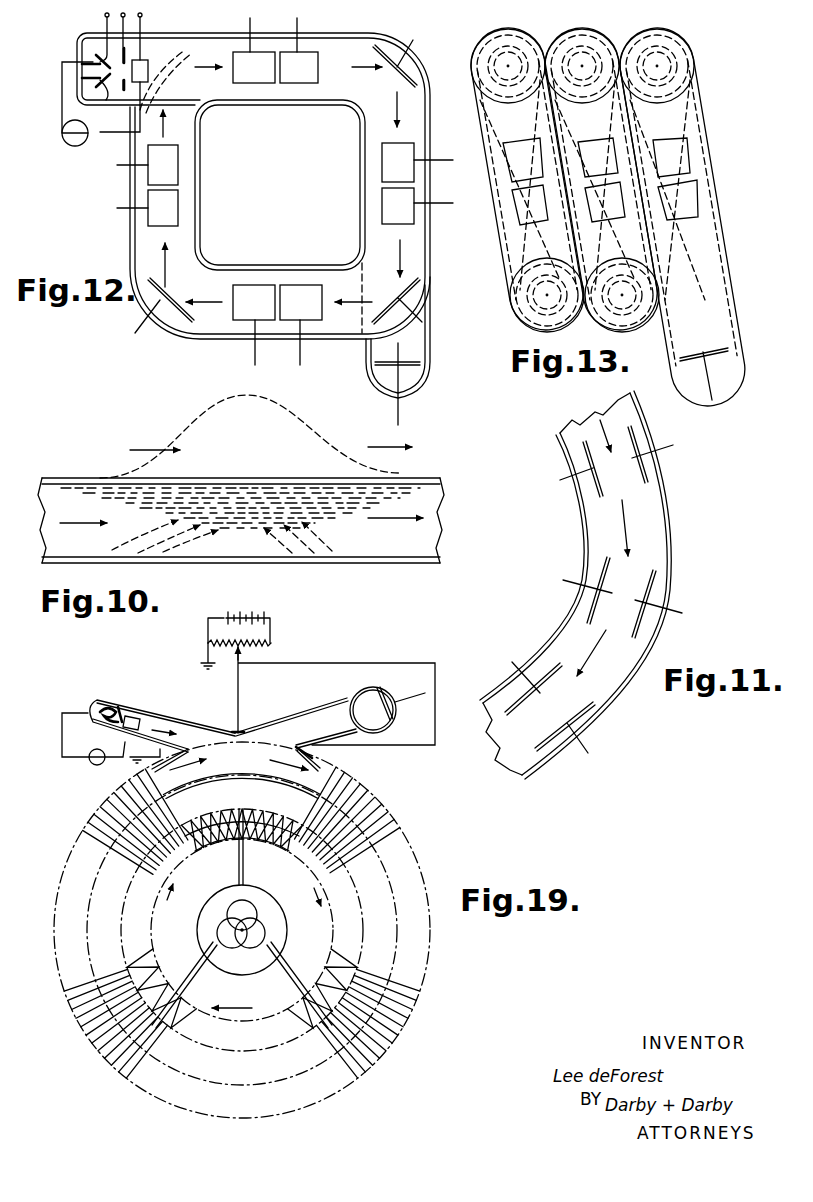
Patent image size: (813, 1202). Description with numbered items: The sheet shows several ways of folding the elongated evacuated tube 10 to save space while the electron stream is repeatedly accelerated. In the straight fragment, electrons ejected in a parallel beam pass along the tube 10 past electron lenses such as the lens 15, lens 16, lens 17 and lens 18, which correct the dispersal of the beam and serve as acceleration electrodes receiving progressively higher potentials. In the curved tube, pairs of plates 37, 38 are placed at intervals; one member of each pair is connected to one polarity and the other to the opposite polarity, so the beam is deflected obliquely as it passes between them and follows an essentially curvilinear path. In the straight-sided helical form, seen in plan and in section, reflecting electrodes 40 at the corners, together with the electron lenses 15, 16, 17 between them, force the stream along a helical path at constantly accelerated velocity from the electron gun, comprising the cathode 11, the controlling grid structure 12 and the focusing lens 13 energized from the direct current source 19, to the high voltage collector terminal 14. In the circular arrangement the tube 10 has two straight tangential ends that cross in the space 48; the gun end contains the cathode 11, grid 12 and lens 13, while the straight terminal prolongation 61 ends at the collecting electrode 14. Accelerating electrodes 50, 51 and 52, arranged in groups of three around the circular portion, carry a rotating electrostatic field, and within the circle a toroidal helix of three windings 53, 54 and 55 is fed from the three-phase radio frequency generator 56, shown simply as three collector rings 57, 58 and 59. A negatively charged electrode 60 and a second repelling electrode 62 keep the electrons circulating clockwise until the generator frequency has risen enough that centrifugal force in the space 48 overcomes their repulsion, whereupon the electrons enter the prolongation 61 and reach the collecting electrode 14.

In FIG. 12, the elongated evacuated tube 10 is at (433, 230).
In FIG. 13, the elongated evacuated tube 10 is at (718, 228).
In FIG. 10, the elongated evacuated tube 10 is at (415, 476).
In FIG. 11, the elongated evacuated tube 10 is at (660, 580).
In FIG. 19, the elongated evacuated tube 10 is at (325, 757).
In FIG. 12, the cathode 11 is at (90, 64).
In FIG. 19, the cathode 11 is at (106, 703).
In FIG. 12, the controlling grid structure 12 is at (121, 72).
In FIG. 19, the controlling grid structure 12 is at (120, 706).
In FIG. 12, the focusing lens 13 is at (103, 50).
In FIG. 19, the focusing lens 13 is at (140, 718).
In FIG. 12, the target or collecting electrode 14 is at (418, 362).
In FIG. 13, the target or collecting electrode 14 is at (720, 350).
In FIG. 19, the target or collecting electrode 14 is at (392, 715).
In FIG. 12, the electron lens 15 is at (292, 55).
In FIG. 13, the electron lens 15 is at (470, 50).
In FIG. 12, the electron lens 16 is at (405, 168).
In FIG. 13, the electron lens 16 is at (690, 150).
In FIG. 12, the electron lens 17 is at (250, 313).
In FIG. 12, the electron lens 18 is at (155, 197).
In FIG. 12, the direct current energizing source 19 is at (150, 170).
In FIG. 11, the deflecting electrode plate 37 is at (565, 462).
In FIG. 11, the deflecting electrode plate 38 is at (660, 462).
In FIG. 12, the reflecting electrode 40 is at (428, 285).
In FIG. 19, the crossing space 48 is at (238, 765).
In FIG. 19, the accelerating electrode 50 is at (340, 772).
In FIG. 19, the accelerating electrode 51 is at (345, 785).
In FIG. 19, the accelerating electrode 52 is at (352, 800).
In FIG. 19, the toroidal winding 53 is at (292, 842).
In FIG. 19, the toroidal winding 54 is at (322, 945).
In FIG. 19, the toroidal winding 55 is at (246, 978).
In FIG. 19, the three-phase radio frequency generator 56 is at (252, 950).
In FIG. 19, the collector ring 57 is at (255, 915).
In FIG. 19, the collector ring 58 is at (220, 933).
In FIG. 19, the collector ring 59 is at (228, 905).
In FIG. 19, the negatively charged electrode 60 is at (240, 731).
In FIG. 19, the straight terminal prolongation 61 is at (303, 710).
In FIG. 19, the second negatively charged repelling electrode 62 is at (298, 748).